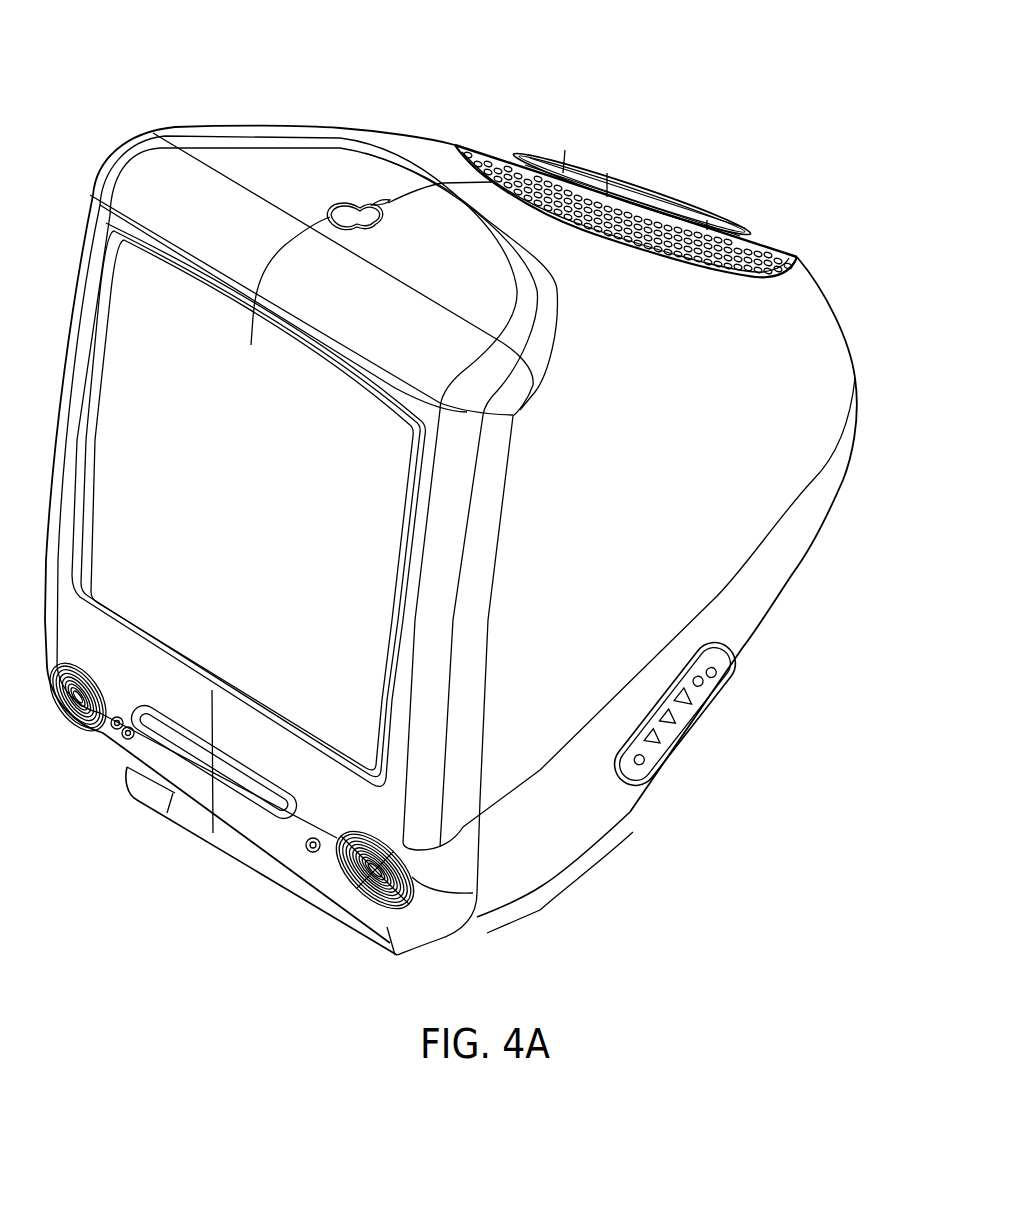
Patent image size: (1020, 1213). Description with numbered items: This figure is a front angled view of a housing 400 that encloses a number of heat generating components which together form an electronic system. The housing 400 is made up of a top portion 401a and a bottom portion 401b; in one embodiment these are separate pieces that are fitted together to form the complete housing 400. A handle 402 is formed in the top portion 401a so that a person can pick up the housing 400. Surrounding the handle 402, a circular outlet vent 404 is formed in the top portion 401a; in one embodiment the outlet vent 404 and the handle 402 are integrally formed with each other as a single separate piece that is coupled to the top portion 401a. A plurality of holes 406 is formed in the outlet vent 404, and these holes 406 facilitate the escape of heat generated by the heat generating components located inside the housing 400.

The housing 400 is at (352, 128).
The top portion 401a is at (803, 337).
The bottom portion 401b is at (783, 560).
The handle 402 is at (607, 173).
The circular outlet vent 404 is at (483, 150).
The holes 406 is at (778, 243).